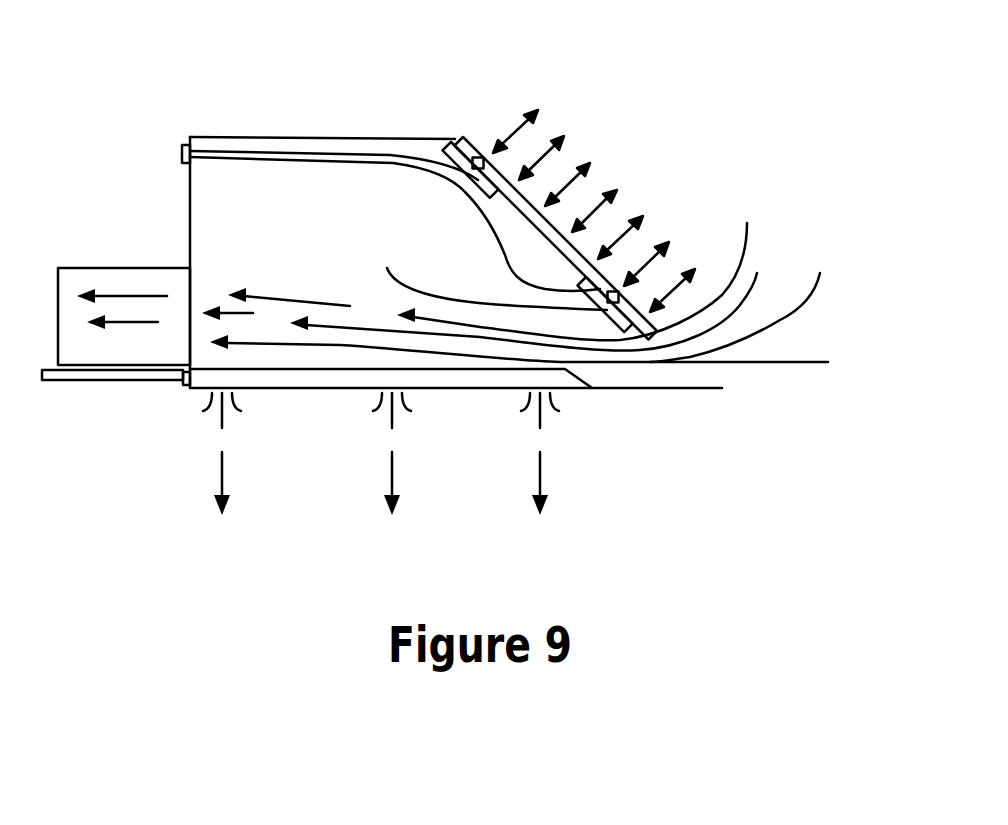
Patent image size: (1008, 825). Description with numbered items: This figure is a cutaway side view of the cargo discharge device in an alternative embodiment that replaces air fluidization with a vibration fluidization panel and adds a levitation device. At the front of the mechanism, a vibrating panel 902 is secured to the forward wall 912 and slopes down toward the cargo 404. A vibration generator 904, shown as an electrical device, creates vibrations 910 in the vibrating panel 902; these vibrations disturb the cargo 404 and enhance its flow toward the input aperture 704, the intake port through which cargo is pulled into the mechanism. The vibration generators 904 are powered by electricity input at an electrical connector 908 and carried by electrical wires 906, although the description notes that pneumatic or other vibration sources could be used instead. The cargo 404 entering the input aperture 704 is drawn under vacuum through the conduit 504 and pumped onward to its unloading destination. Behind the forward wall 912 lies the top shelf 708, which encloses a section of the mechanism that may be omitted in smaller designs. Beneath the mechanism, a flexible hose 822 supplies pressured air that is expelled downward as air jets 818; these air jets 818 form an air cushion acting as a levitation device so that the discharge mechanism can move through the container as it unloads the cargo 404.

The cargo 404 is at (820, 255).
The conduit 504 is at (152, 268).
The input aperture 704 is at (718, 378).
The top shelf 708 is at (408, 137).
The air jets 818 is at (180, 388).
The flexible hose 822 is at (113, 378).
The vibrating panel 902 is at (577, 266).
The vibration generator 904 is at (480, 181).
The electrical wires 906 is at (395, 165).
The electrical connector 908 is at (185, 153).
The vibrations 910 is at (503, 65).
The forward wall 912 is at (533, 223).